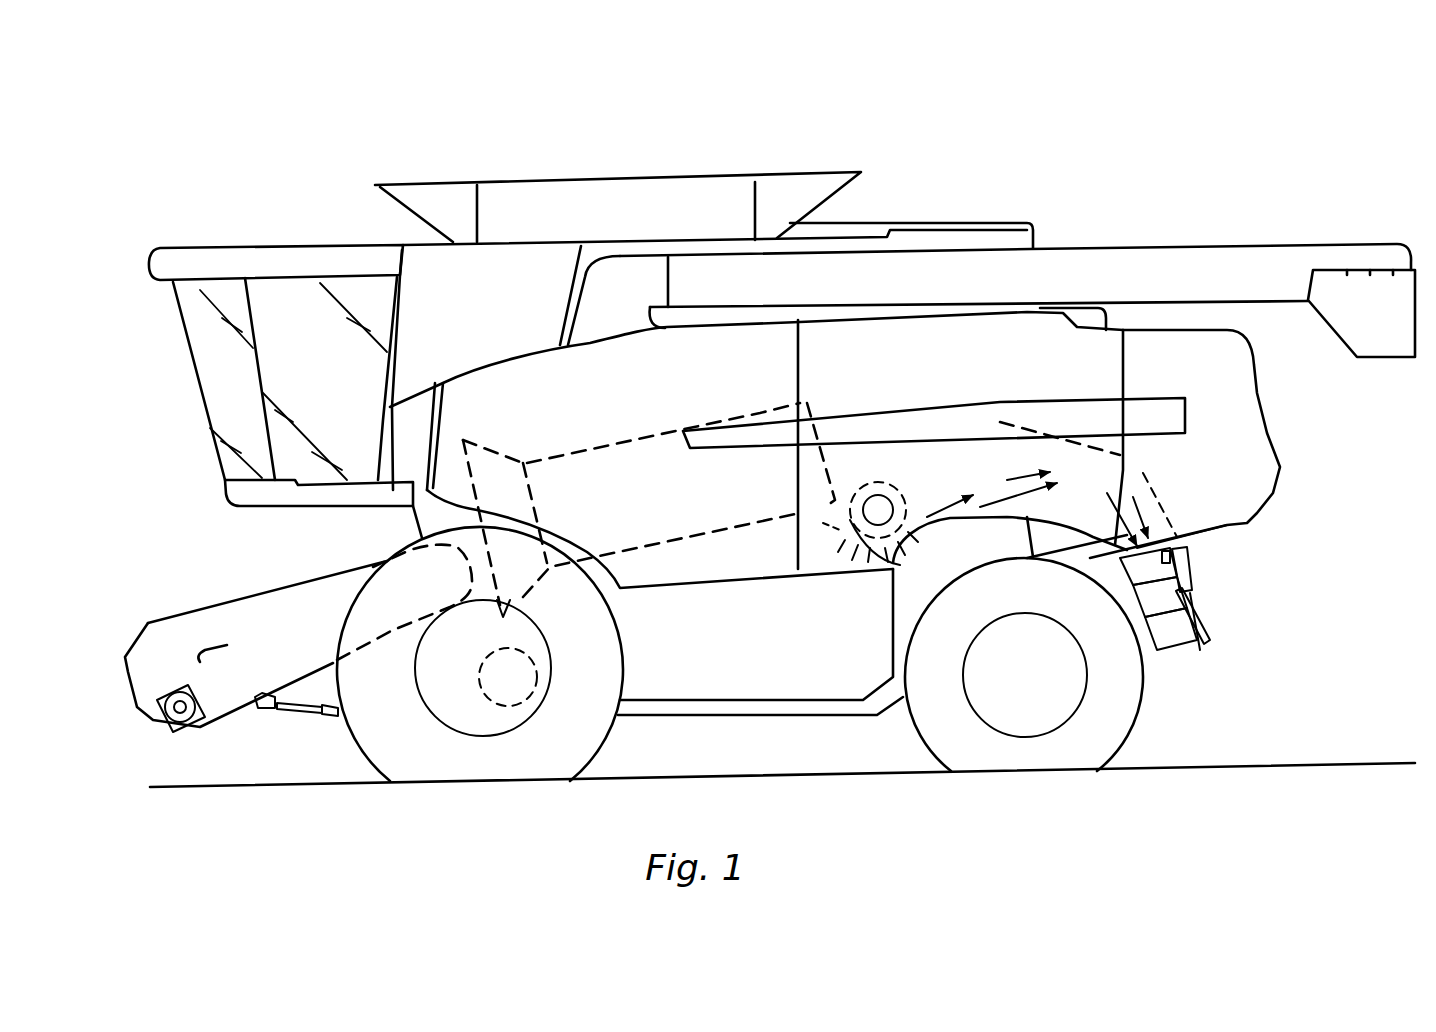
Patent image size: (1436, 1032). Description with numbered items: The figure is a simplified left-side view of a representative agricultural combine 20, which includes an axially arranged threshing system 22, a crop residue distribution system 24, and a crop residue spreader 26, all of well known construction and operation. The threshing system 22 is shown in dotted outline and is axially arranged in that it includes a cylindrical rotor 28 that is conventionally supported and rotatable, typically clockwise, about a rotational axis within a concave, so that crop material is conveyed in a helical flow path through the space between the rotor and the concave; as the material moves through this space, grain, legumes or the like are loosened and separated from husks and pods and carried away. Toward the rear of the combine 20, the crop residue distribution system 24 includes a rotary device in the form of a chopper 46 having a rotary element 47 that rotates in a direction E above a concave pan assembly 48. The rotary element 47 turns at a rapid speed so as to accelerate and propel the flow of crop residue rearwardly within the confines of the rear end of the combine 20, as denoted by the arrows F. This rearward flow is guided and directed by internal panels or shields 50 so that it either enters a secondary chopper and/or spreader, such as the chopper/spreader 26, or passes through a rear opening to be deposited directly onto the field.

The agricultural combine 20 is at (1228, 208).
The axially arranged threshing system 22 is at (586, 444).
The crop residue distribution system 24 is at (907, 458).
The crop residue spreader 26 is at (1179, 651).
The cylindrical rotor 28 is at (655, 550).
The chopper 46 is at (859, 481).
The rotary element 47 is at (889, 492).
The concave pan assembly 48 is at (870, 548).
The shields 50 is at (1137, 460).
The direction of rotation E is at (877, 537).
The arrows denoting rearward flow of crop residue F is at (1013, 513).